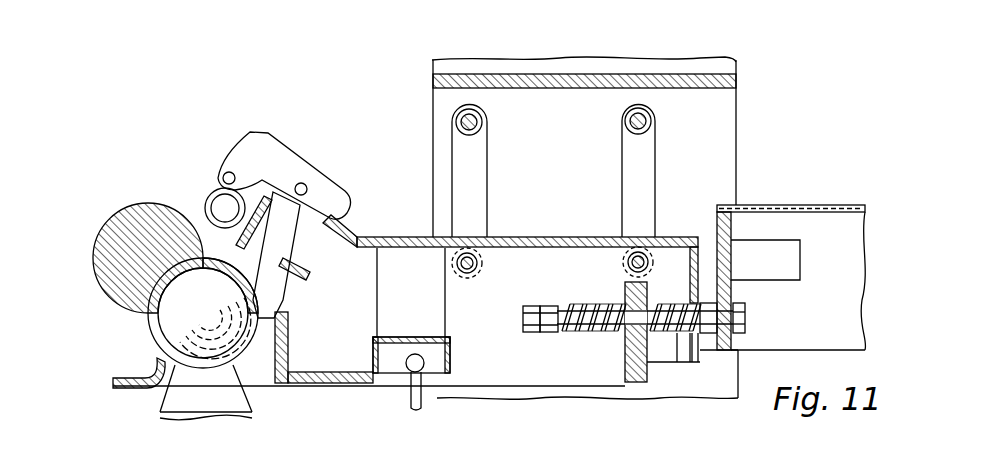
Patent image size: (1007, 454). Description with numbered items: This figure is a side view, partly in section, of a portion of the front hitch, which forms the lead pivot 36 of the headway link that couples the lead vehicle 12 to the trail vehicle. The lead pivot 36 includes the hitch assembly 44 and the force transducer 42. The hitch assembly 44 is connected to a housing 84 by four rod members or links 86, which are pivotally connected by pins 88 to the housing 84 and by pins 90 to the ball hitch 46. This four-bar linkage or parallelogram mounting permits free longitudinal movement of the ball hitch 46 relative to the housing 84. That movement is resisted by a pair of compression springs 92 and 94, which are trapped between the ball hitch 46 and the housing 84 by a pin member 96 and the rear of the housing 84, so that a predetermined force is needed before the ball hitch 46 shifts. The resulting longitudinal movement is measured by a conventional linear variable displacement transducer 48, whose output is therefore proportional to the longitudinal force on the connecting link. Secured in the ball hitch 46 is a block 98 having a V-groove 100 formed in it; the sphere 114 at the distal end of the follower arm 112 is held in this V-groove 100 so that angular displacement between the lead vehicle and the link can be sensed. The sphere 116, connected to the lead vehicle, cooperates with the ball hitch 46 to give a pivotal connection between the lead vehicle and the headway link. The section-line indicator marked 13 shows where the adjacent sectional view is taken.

The front pivot 36 is at (420, 137).
The force transducer 42 is at (768, 323).
The hitch assembly 44 is at (199, 243).
The ball hitch 46 is at (378, 237).
The linear variable displacement transducer 48 is at (768, 248).
The housing 84 is at (735, 70).
The links 86 is at (476, 178).
The pins 88 is at (478, 122).
The pins 90 is at (481, 272).
The compression spring 92 is at (706, 330).
The compression spring 94 is at (580, 335).
The pin member 96 is at (680, 328).
The block 98 is at (384, 316).
The V-groove 100 is at (396, 355).
The follower arm 112 is at (410, 401).
The sphere 114 is at (424, 362).
The sphere 116 is at (183, 286).
The lead vehicle 12 is at (716, 14).
The section line 13- 13 is at (957, 398).